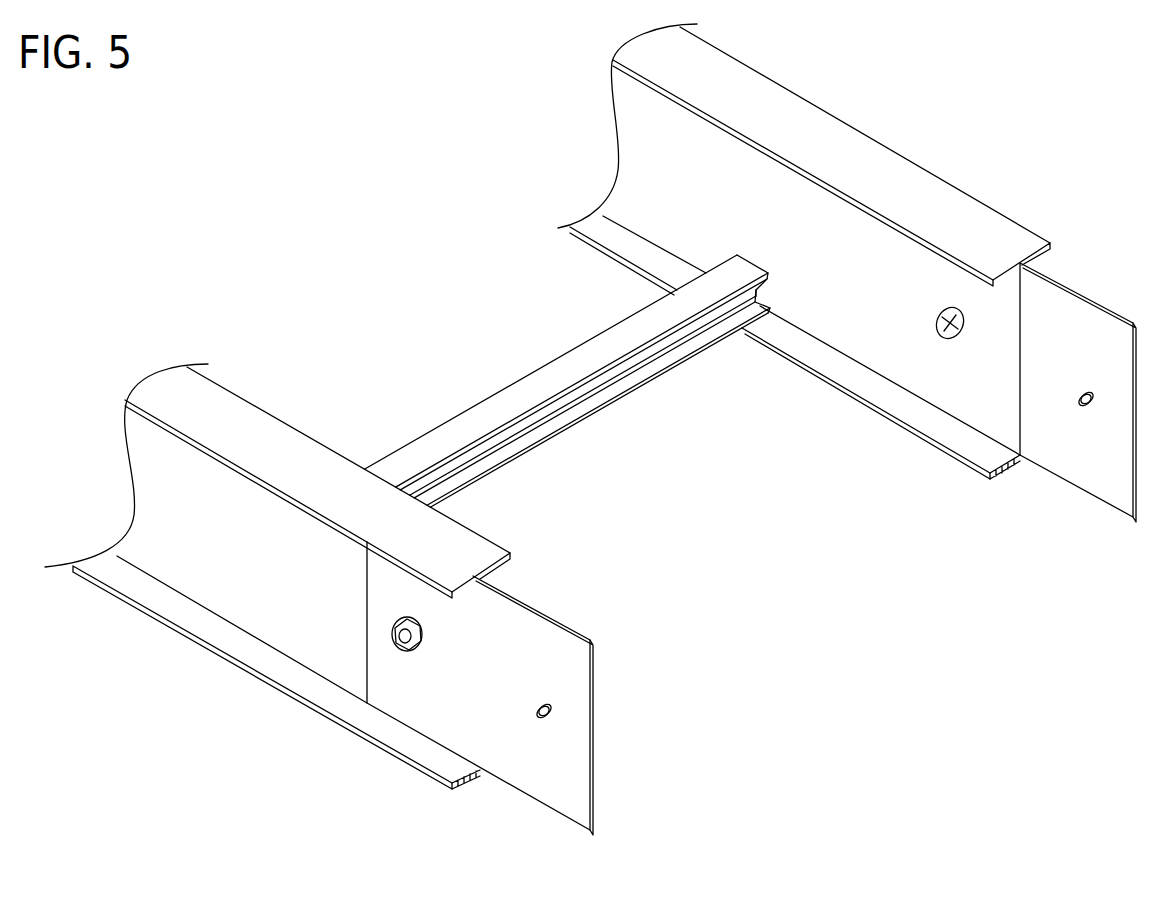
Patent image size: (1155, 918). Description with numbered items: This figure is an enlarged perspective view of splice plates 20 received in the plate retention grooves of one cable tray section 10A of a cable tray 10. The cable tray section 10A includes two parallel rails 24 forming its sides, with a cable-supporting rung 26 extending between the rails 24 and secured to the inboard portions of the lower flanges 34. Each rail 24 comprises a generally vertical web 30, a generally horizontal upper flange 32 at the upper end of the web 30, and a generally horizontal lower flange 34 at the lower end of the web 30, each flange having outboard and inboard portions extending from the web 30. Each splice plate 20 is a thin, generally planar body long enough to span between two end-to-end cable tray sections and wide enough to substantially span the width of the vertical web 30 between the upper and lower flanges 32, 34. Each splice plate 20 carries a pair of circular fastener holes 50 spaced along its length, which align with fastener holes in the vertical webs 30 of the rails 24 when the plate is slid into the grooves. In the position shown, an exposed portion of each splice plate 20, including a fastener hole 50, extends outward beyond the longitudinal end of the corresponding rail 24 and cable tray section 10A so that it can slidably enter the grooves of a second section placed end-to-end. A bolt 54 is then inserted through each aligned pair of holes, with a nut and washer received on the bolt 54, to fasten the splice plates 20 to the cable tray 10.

The cable tray 10 is at (1003, 119).
The cable tray section 10A is at (876, 119).
The splice plate 20 is at (1063, 327).
The rail 24 is at (746, 47).
The cable-supporting rung 26 is at (598, 406).
The vertical web 30 is at (828, 305).
The upper flange 32 is at (982, 228).
The lower flange 34 is at (958, 458).
The fastener hole 50 is at (1087, 403).
The bolt 54 is at (945, 337).